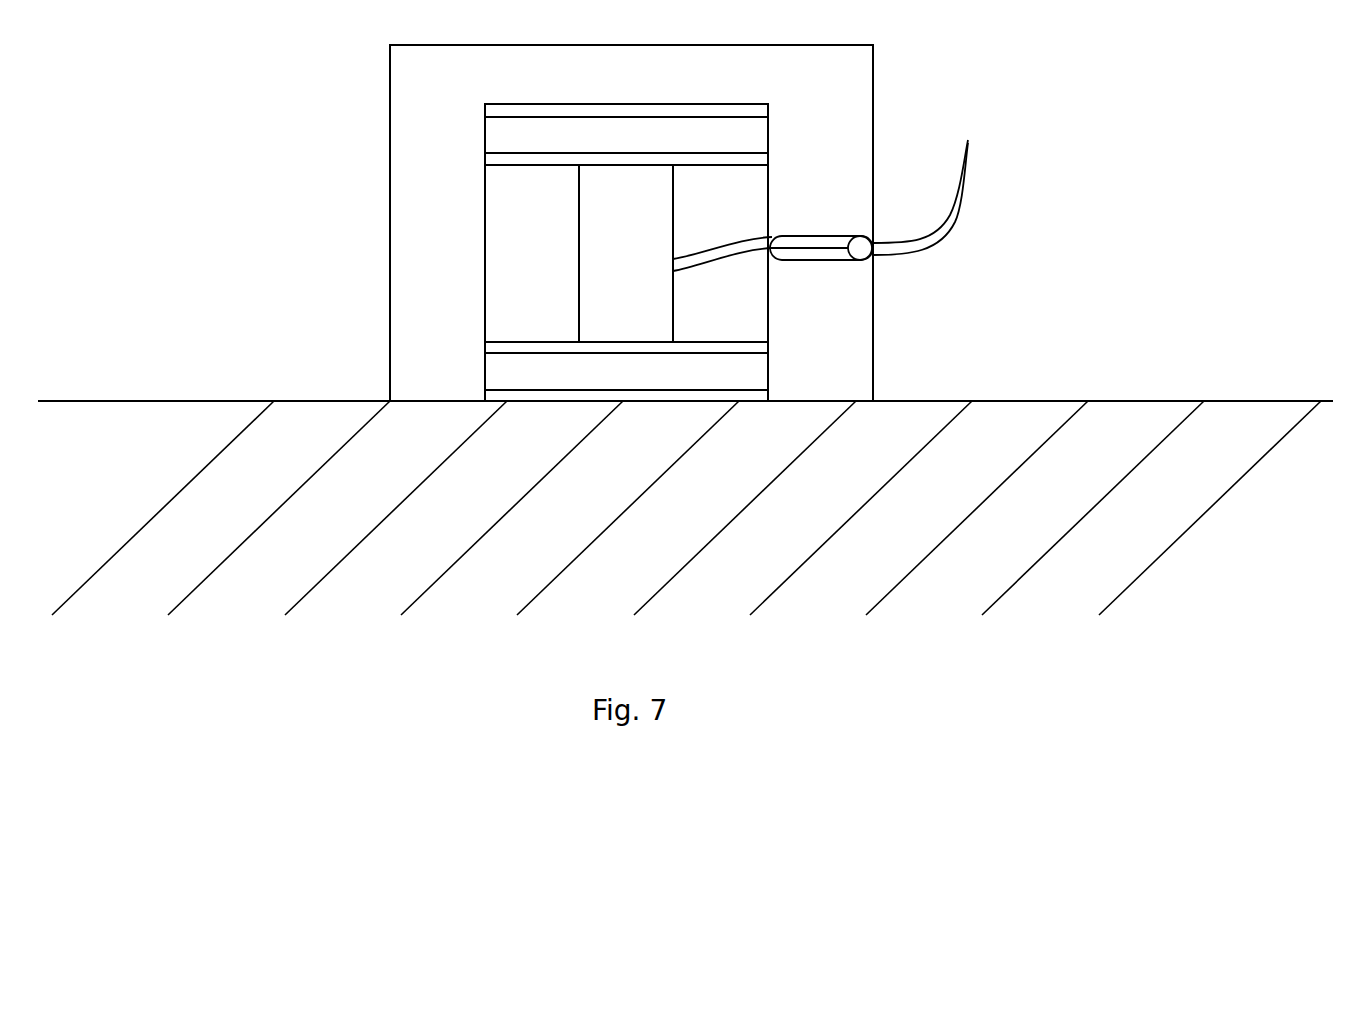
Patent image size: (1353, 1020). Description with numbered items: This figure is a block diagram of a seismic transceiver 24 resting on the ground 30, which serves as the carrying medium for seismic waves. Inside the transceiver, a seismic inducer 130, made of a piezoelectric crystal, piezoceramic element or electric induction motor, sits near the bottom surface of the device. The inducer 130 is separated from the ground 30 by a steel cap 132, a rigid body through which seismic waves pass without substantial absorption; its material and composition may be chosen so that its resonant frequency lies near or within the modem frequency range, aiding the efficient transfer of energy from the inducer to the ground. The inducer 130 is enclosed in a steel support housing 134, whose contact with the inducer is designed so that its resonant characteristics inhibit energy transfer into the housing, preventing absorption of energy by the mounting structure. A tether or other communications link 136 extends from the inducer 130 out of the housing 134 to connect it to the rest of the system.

The seismic transceiver 24 is at (236, 183).
The ground 30 is at (584, 519).
The seismic inducer 130 is at (626, 253).
The steel cap 132 is at (492, 349).
The steel support housing 134 is at (821, 223).
The communications link 136 is at (968, 153).